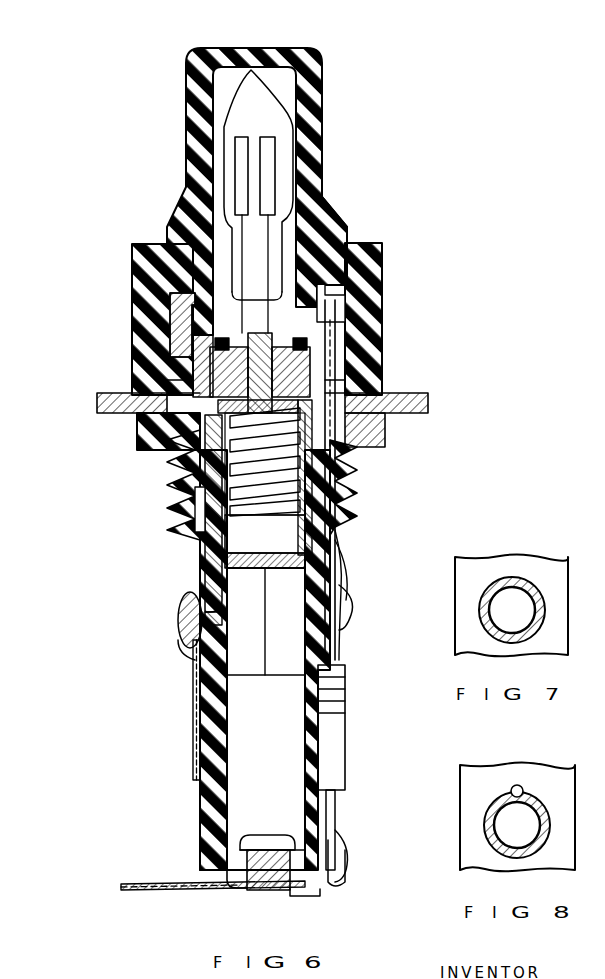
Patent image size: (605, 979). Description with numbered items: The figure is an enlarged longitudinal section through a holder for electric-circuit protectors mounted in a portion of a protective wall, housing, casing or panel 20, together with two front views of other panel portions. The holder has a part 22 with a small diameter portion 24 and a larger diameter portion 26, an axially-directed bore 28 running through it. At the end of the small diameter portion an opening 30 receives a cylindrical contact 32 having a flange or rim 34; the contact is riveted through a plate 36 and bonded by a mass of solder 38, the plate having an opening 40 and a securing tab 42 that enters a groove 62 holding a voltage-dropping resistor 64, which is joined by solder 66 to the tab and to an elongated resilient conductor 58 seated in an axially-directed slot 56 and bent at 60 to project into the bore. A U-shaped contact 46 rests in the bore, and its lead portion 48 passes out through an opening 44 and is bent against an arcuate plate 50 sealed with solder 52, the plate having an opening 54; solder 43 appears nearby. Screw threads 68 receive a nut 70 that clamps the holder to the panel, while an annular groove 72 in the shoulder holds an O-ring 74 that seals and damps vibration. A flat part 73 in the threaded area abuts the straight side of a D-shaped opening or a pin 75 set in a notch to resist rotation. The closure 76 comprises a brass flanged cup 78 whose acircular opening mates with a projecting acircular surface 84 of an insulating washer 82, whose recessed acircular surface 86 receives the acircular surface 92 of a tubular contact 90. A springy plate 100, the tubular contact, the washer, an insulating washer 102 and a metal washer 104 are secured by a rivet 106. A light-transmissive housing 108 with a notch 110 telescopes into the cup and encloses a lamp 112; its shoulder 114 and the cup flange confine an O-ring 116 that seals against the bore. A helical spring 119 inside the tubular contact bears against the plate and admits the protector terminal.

In FIG. 6, the portion of a protective wall, housing, casing or panel 20 is at (97, 400).
In FIG. 6, the part of the holder 22 is at (146, 753).
In FIG. 6, the small diameter portion 24 is at (212, 790).
In FIG. 6, the larger diameter portion 26 is at (353, 248).
In FIG. 6, the axially-directed bore 28 is at (274, 737).
In FIG. 6, the opening 30 is at (227, 870).
In FIG. 6, the contact 32 is at (247, 853).
In FIG. 6, the flange or rim 34 is at (292, 845).
In FIG. 6, the plate 36 is at (192, 891).
In FIG. 6, the mass of solder 38 is at (300, 892).
In FIG. 6, the opening 40 is at (154, 891).
In FIG. 6, the securing tab 42 is at (347, 861).
In FIG. 6, the spring clip 43 is at (182, 642).
In FIG. 6, the opening 44 is at (205, 642).
In FIG. 6, the U-shaped contact 46 is at (200, 525).
In FIG. 6, the portion of the contact 48 is at (210, 548).
In FIG. 6, the plate 50 is at (195, 682).
In FIG. 6, the mass of solder 52 is at (180, 605).
In FIG. 6, the opening 54 is at (196, 750).
In FIG. 6, the axially-directed slot 56 is at (341, 533).
In FIG. 6, the elongated conductor 58 is at (343, 551).
In FIG. 6, the bent portion 60 is at (325, 300).
In FIG. 6, the groove 62 is at (322, 798).
In FIG. 6, the resistor 64 is at (332, 727).
In FIG. 6, the solder 66 is at (351, 582).
In FIG. 6, the screw threads 68 is at (356, 471).
In FIG. 6, the nut 70 is at (385, 433).
In FIG. 6, the annular groove 72 is at (185, 388).
In FIG. 7, the flat part 73 is at (513, 580).
In FIG. 8, the flat part 73 is at (523, 796).
In FIG. 6, the O-ring 74 is at (165, 397).
In FIG. 8, the pin 75 is at (514, 786).
In FIG. 6, the closure 76 is at (378, 119).
In FIG. 6, the flanged cup or sleeve 78 is at (182, 300).
In FIG. 6, the washer 82 is at (225, 372).
In FIG. 6, the projecting acircular surface 84 is at (300, 355).
In FIG. 6, the recessed acircular surface 86 is at (200, 421).
In FIG. 6, the tubular contact 90 is at (230, 463).
In FIG. 6, the acircular surface 92 is at (228, 440).
In FIG. 6, the plate 100 is at (300, 560).
In FIG. 6, the washer 102 is at (220, 347).
In FIG. 6, the metal washer 104 is at (305, 330).
In FIG. 6, the rivet 106 is at (277, 342).
In FIG. 6, the light-transmissive housing 108 is at (188, 128).
In FIG. 6, the notch 110 is at (337, 320).
In FIG. 6, the lamp 112 is at (252, 90).
In FIG. 6, the shoulder 114 is at (347, 233).
In FIG. 6, the O-ring 116 is at (340, 292).
In FIG. 6, the helical spring 119 is at (263, 511).